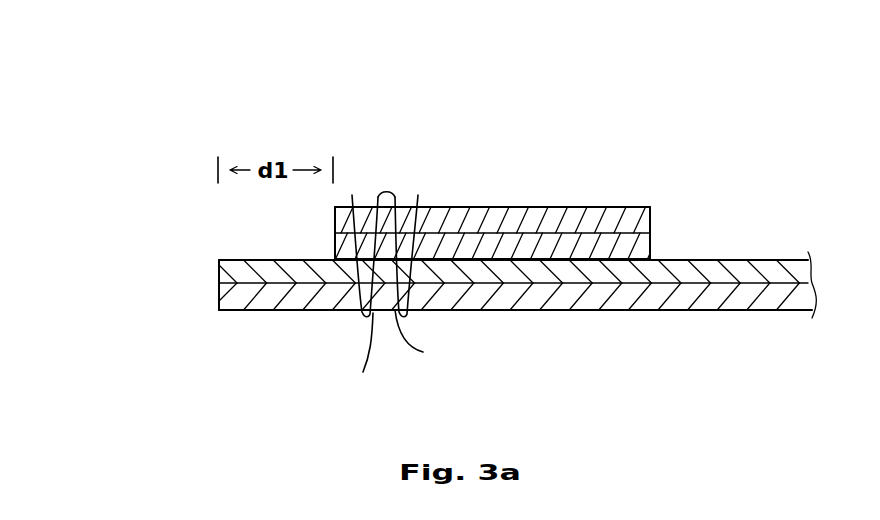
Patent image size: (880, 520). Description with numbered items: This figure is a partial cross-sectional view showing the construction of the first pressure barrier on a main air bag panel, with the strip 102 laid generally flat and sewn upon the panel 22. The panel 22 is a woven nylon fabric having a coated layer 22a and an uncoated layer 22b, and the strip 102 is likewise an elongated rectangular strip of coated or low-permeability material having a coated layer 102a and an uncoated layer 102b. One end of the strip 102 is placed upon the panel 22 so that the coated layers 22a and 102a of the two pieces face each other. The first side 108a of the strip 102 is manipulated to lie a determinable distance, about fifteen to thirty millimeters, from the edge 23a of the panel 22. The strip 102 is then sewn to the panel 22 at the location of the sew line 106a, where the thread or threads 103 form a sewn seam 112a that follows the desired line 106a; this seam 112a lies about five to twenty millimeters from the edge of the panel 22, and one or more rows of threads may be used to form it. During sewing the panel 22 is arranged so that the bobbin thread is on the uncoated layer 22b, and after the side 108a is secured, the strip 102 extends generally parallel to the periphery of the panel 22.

The first panel 22 is at (470, 292).
The coated layer of panel 22a is at (239, 267).
The uncoated layer of panel 22b is at (267, 300).
The edge of panel 23a is at (213, 292).
The strip 102 is at (519, 141).
The coated layer of strip 102a is at (641, 254).
The uncoated layer of strip 102b is at (567, 212).
The first side of strip 108a is at (335, 206).
The threads 103 is at (411, 274).
The sew line 106a is at (437, 340).
The sewn seam 112a is at (370, 358).